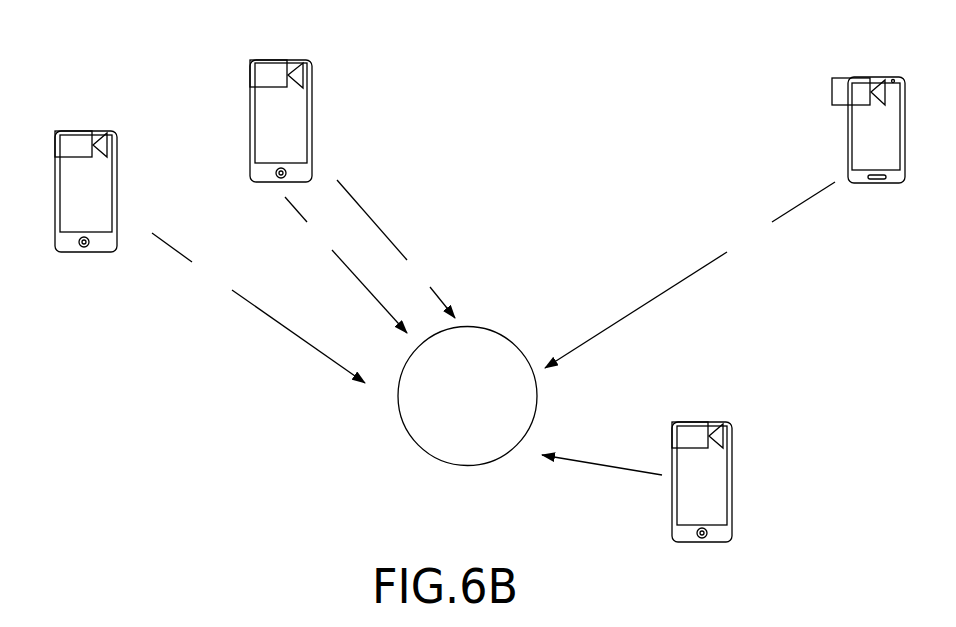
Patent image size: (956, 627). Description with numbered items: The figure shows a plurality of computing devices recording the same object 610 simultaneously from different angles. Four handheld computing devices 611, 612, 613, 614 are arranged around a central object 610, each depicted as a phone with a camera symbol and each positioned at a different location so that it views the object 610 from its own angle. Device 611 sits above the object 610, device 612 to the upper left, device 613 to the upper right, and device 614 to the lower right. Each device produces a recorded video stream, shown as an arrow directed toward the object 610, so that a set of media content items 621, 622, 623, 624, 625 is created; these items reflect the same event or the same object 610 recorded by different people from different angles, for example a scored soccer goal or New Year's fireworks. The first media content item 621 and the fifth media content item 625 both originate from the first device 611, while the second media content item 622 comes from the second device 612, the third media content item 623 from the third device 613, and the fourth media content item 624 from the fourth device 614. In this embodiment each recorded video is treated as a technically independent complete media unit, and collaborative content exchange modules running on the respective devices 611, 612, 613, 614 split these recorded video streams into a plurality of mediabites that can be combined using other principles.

The object 610 is at (478, 330).
The computing device 611 is at (312, 122).
The computing device 612 is at (117, 177).
The computing device 613 is at (848, 128).
The computing device 614 is at (733, 481).
The media content item 621 is at (315, 255).
The media content item 622 is at (203, 292).
The media content item 623 is at (752, 255).
The media content item 624 is at (618, 428).
The media content item 625 is at (445, 258).